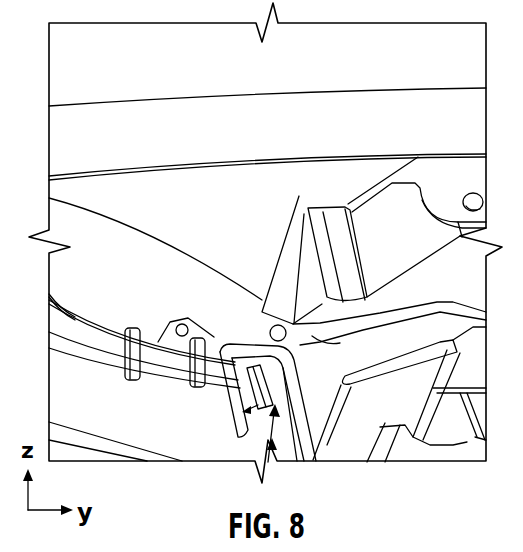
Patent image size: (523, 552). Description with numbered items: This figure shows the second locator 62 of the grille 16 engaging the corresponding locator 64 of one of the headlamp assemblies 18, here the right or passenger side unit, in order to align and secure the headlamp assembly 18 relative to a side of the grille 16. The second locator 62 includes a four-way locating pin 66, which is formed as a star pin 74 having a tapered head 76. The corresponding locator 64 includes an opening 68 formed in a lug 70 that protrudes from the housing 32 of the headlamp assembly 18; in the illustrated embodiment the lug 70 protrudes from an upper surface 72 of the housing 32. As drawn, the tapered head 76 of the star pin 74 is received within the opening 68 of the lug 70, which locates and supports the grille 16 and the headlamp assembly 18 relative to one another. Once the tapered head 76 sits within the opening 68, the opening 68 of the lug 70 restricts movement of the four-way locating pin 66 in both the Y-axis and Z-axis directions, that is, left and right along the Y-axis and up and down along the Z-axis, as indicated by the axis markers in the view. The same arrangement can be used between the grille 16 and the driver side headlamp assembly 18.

The grille 16 is at (315, 113).
The headlamp assembly 18 is at (42, 427).
The housing 32 is at (80, 453).
The second locator 62 is at (299, 226).
The corresponding locator 64 is at (285, 452).
The four-way locating pin 66 is at (307, 316).
The opening 68 is at (318, 430).
The lug 70 is at (337, 406).
The upper surface 72 is at (68, 392).
The star pin 74 is at (238, 340).
The tapered head 76 is at (238, 424).